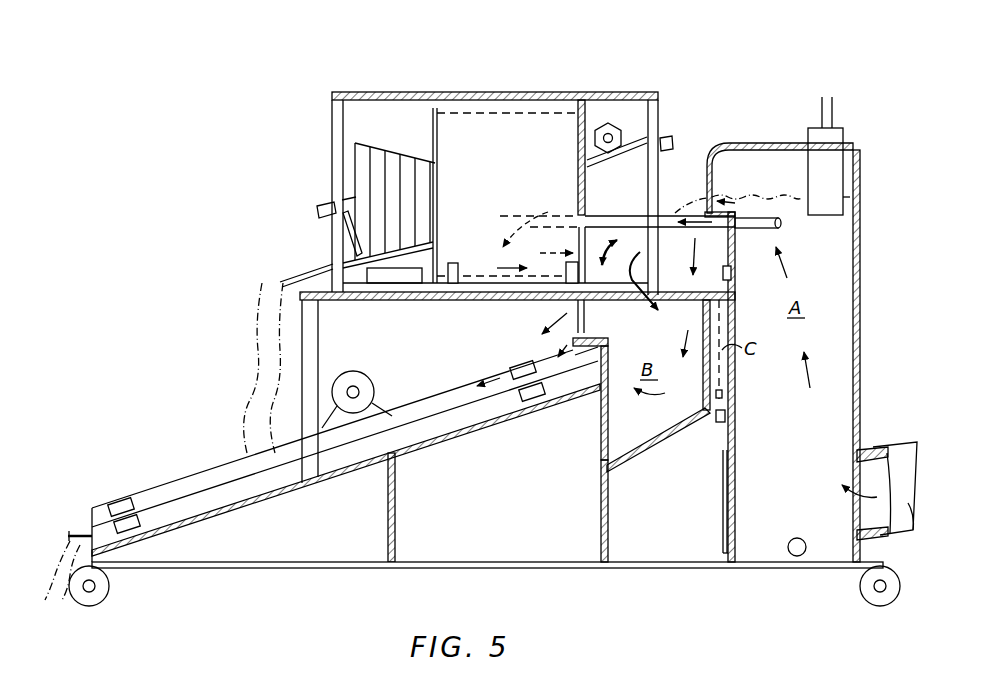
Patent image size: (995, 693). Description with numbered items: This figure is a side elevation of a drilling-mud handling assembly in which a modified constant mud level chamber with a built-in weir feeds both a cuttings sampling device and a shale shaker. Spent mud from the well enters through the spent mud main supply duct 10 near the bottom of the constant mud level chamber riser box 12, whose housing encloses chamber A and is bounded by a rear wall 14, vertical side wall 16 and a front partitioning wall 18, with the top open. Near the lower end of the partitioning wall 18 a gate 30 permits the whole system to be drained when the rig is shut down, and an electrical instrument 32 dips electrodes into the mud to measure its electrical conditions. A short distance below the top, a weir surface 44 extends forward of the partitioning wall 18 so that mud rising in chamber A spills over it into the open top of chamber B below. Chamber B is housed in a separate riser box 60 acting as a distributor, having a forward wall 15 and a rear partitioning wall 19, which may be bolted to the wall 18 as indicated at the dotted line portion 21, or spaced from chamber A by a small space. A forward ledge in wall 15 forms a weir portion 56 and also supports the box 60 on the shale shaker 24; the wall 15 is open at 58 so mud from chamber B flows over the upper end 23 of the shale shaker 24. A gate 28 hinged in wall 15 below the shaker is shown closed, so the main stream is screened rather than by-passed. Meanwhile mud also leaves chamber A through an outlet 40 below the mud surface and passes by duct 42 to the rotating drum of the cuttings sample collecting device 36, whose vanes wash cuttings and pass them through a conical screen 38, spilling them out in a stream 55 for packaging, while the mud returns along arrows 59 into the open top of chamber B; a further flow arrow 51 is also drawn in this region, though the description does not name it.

The spent mud main supply duct 10 is at (882, 448).
The constant mud level chamber riser box 12 is at (866, 355).
The rear wall 14 is at (861, 249).
The forward wall 15 is at (601, 492).
The vertical side wall 16 is at (797, 190).
The partitioning wall 18 is at (736, 254).
The rear partitioning wall 19 is at (672, 355).
The dotted line portion 21 is at (730, 388).
The upper end of the shale shaker 23 is at (606, 375).
The shale shaker 24 is at (210, 500).
The gate 28 is at (601, 441).
The gate 30 is at (723, 524).
The electrical instrument 32 is at (845, 182).
The cuttings sample collecting device 36 is at (532, 118).
The conical screen 38 is at (382, 150).
The outlet 40 is at (780, 228).
The duct 42 is at (613, 215).
The weir surface 44 is at (666, 151).
The air flow passage 51 is at (659, 290).
The stream 55 is at (262, 335).
The weir portion 56 is at (600, 343).
The opening 58 is at (567, 309).
The arrows 59 is at (620, 249).
The riser box 60 is at (655, 442).